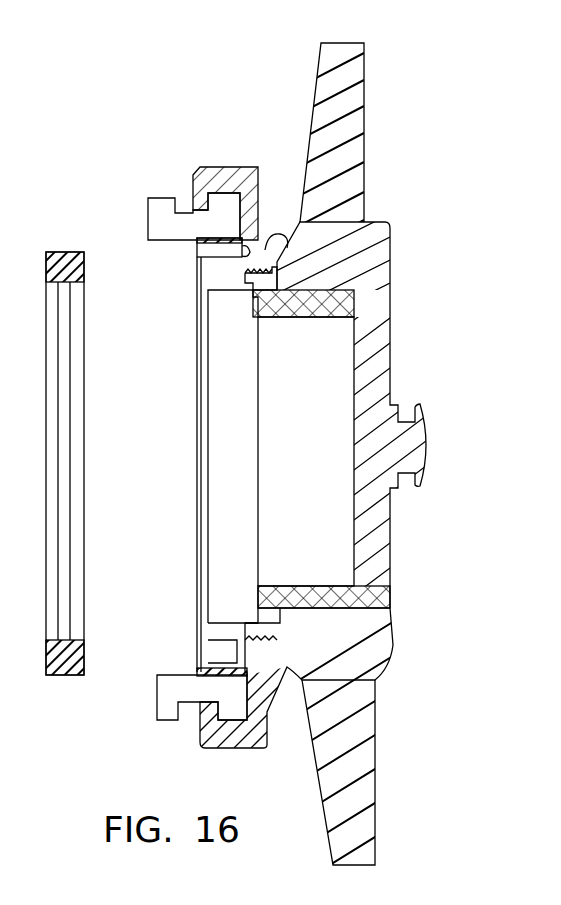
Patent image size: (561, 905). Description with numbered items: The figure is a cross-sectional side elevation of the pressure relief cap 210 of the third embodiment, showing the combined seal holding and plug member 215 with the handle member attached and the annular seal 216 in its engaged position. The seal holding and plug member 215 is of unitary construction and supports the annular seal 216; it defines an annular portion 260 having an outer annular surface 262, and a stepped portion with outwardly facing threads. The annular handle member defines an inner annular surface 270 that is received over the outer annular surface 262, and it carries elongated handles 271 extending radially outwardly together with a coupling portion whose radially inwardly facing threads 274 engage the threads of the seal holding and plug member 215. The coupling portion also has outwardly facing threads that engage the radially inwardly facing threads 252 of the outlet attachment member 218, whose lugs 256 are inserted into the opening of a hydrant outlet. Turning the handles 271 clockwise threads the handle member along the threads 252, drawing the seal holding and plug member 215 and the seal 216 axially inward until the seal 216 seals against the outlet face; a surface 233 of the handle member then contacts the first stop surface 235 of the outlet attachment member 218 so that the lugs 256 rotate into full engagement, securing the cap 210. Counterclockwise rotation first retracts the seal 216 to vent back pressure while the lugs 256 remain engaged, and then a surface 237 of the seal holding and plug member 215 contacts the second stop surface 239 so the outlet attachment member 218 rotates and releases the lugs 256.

The pressure relief cap 210 is at (309, 474).
The combined seal holding and plug member 215 is at (426, 370).
The annular seal 216 is at (64, 245).
The outlet attachment member 218 is at (203, 152).
The surface 233 is at (246, 256).
The first stop surface 235 is at (280, 236).
The surface 237 is at (212, 247).
The second stop surface 239 is at (225, 270).
The radially inwardly facing threads 252 is at (240, 293).
The lugs 256 is at (158, 208).
The annular portion 260 is at (349, 613).
The outer annular surface 262 is at (302, 318).
The inner annular surface 270 is at (353, 293).
The elongated handles 271 is at (364, 116).
The radially inwardly facing threads 274 is at (290, 588).